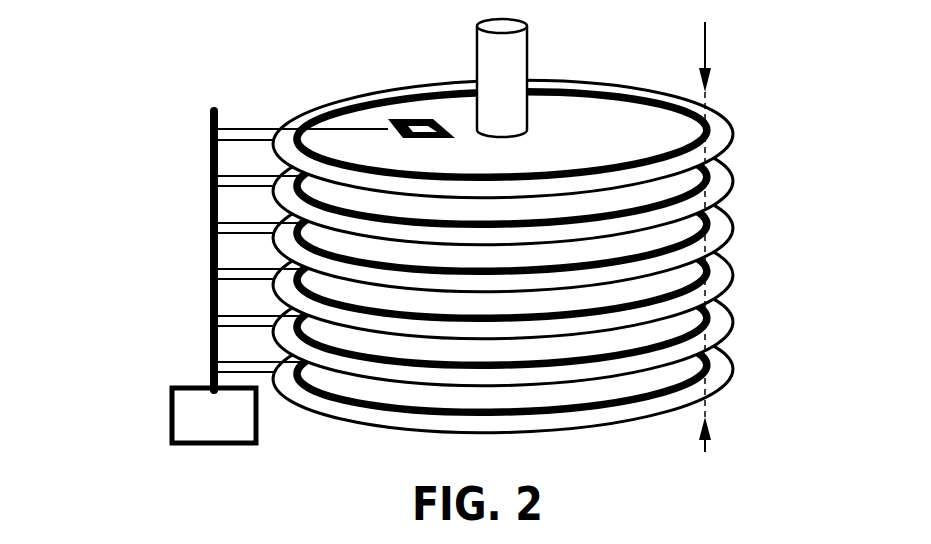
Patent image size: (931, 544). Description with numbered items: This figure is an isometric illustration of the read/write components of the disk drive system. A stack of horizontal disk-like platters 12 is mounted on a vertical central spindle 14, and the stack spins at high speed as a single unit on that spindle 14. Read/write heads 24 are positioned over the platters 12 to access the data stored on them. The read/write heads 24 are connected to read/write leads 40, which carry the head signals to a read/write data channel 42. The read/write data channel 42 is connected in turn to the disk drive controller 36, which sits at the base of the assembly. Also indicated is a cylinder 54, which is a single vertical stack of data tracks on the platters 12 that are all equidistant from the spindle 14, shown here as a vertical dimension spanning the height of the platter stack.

The platters 12 is at (742, 418).
The spindle 14 is at (528, 70).
The read/write heads 24 is at (422, 54).
The disk drive controller 36 is at (136, 410).
The read/write leads 40 is at (249, 98).
The read/write data channel 42 is at (210, 246).
The cylinder 54 is at (707, 62).